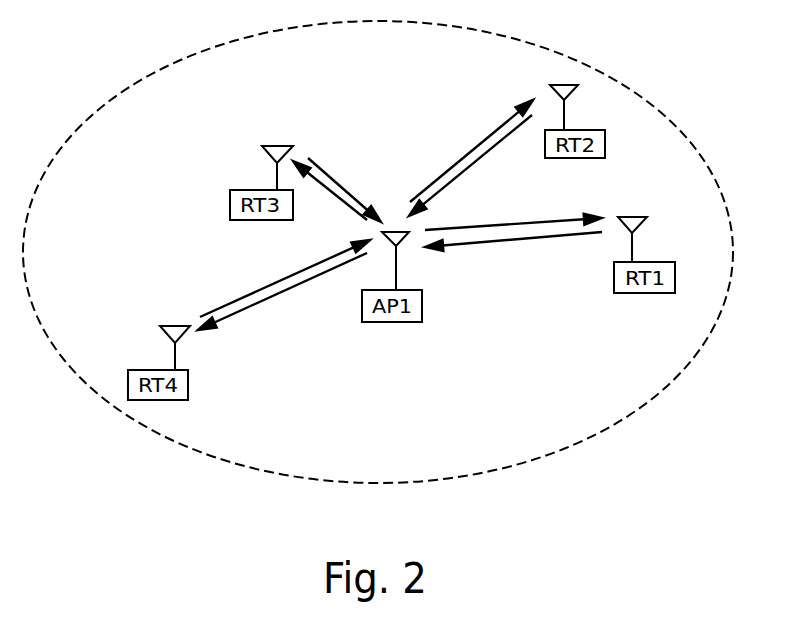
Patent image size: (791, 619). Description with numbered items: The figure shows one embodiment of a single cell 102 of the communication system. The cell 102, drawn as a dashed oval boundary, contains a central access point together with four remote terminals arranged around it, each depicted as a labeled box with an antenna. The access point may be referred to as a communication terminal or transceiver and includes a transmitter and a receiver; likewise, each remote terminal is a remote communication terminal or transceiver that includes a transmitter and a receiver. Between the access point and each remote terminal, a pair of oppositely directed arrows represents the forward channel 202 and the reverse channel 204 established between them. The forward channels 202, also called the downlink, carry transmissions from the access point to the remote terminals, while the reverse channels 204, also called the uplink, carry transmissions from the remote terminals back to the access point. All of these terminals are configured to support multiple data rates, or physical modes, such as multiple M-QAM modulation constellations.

The cell 102 is at (613, 78).
The forward channel 202 is at (473, 148).
The reverse channel 204 is at (483, 155).